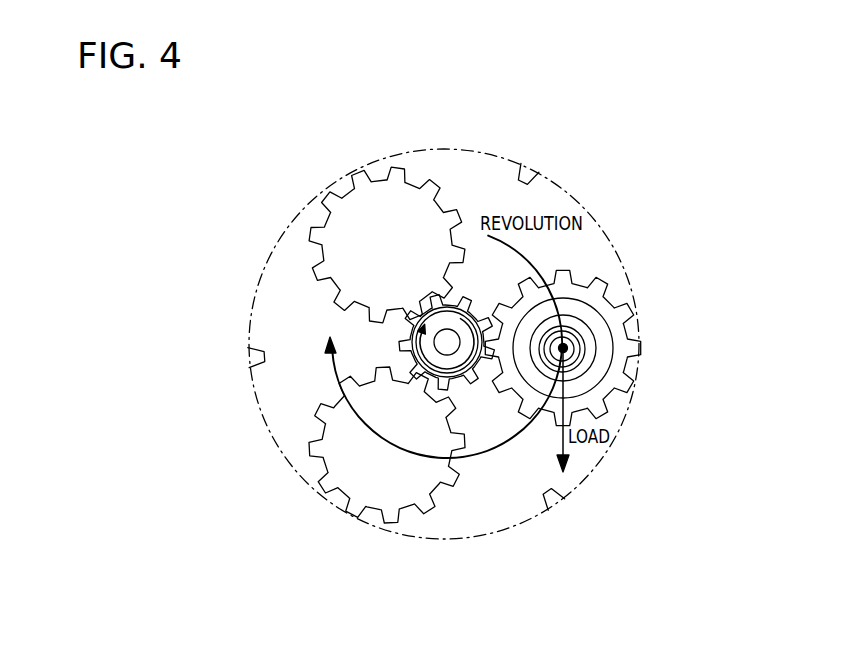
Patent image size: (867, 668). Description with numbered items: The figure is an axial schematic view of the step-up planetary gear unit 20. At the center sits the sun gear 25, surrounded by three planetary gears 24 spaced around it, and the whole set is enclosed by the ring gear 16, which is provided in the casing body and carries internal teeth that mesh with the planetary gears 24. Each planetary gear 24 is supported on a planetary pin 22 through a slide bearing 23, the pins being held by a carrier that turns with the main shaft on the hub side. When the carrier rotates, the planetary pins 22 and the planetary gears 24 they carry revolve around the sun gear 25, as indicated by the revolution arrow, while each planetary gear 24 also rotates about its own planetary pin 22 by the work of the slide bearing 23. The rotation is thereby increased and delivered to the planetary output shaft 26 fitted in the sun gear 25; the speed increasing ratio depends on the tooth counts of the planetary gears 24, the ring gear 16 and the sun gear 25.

The ring gear 16 is at (545, 183).
The planetary gear unit 20 is at (603, 226).
The planetary pin 22 is at (590, 365).
The slide bearing 23 is at (593, 328).
The planetary gear 24 is at (350, 197).
The sun gear 25 is at (410, 336).
The planetary output shaft 26 is at (446, 348).